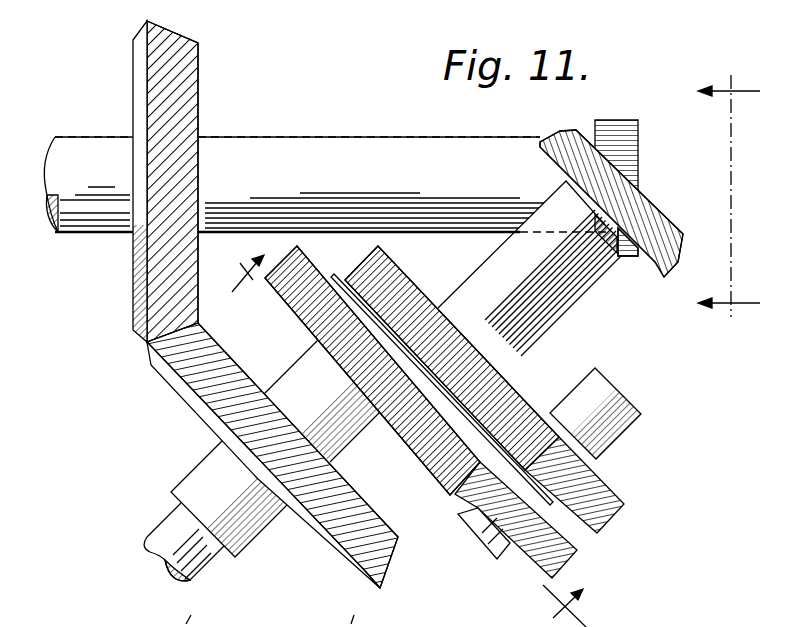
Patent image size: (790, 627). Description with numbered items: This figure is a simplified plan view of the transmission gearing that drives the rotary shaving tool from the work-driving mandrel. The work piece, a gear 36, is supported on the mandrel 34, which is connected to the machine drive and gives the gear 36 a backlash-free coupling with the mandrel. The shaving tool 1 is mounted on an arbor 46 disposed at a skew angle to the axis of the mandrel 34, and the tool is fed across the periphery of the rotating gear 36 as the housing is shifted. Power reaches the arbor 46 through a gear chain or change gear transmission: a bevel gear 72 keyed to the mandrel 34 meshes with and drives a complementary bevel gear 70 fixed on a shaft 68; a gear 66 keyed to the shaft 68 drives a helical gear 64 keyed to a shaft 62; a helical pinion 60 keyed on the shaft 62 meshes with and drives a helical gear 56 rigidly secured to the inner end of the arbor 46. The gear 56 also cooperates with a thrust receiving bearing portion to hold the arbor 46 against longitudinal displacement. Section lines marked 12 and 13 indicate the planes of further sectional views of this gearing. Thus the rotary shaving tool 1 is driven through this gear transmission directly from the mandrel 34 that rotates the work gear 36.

The shaving tool 1 is at (574, 128).
The section line 12 is at (238, 268).
The section line 13 is at (765, 313).
The mandrel 34 is at (303, 142).
The gear 36 is at (623, 126).
The arbor 46 is at (568, 293).
The helical gear 56 is at (403, 276).
The helical pinion 60 is at (623, 497).
The shaft 62 is at (630, 434).
The helical gear 64 is at (560, 556).
The gear 66 is at (272, 291).
The shaft 68 is at (338, 433).
The bevel gear 70 is at (183, 395).
The bevel gear 72 is at (197, 42).